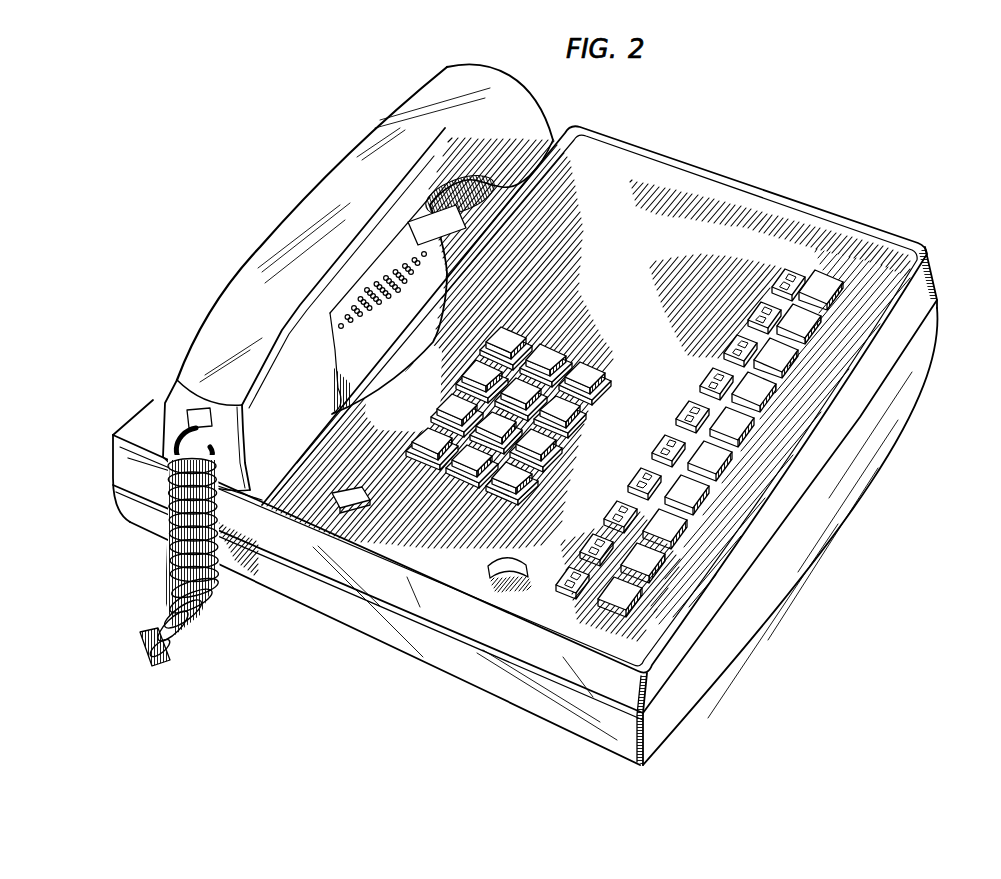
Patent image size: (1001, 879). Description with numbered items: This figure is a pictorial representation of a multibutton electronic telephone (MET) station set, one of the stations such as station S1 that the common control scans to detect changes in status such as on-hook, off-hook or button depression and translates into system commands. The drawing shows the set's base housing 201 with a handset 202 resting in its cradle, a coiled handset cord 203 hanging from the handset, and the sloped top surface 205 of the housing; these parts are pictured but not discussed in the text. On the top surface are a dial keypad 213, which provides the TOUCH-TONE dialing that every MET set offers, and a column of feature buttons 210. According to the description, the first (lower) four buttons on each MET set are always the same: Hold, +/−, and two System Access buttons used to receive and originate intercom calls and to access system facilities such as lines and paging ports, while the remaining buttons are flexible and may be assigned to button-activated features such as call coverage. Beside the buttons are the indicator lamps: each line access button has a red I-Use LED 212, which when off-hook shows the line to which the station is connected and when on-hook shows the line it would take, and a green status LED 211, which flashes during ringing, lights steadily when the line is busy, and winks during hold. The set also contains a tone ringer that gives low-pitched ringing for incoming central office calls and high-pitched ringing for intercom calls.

The station S1 is at (918, 283).
The base housing 201 is at (835, 513).
The handset 202 is at (277, 270).
The handset cord 203 is at (197, 643).
The housing top surface 205 is at (633, 163).
The function keys 210 is at (718, 452).
The status LED 211 is at (605, 447).
The I-Use LED 212 is at (773, 265).
The dial keypad 213 is at (547, 512).